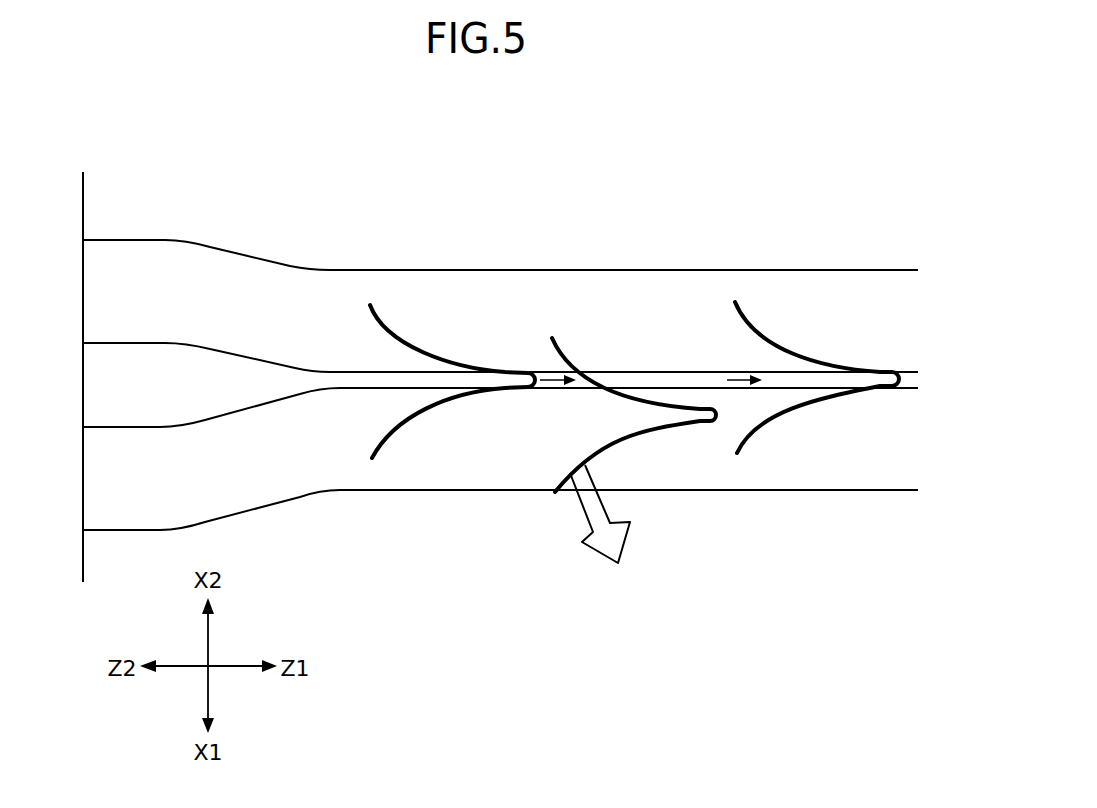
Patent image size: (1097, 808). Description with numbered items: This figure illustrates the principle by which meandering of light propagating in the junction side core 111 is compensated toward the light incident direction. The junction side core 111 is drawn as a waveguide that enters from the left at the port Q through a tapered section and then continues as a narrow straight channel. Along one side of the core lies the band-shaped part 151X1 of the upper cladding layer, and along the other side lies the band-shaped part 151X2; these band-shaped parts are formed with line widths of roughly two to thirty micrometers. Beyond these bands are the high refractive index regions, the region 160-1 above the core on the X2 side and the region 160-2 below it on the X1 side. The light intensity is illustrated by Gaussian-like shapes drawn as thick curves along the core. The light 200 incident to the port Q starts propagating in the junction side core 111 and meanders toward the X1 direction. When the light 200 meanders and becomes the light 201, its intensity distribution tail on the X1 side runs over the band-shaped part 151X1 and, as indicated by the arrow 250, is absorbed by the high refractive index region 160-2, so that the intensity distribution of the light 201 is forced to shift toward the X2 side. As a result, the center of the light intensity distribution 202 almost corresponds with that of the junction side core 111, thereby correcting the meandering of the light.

The junction side core 111 is at (328, 385).
The light incident to the port 200 is at (445, 355).
The meandered light 201 is at (652, 397).
The light intensity distribution 202 is at (808, 355).
The arrow 250 is at (605, 511).
The band-shaped part 151X1 is at (800, 470).
The band-shaped part 151X2 is at (728, 282).
The high refractive index region 160-1 is at (517, 196).
The high refractive index region 160-2 is at (517, 590).
The port Q is at (66, 386).